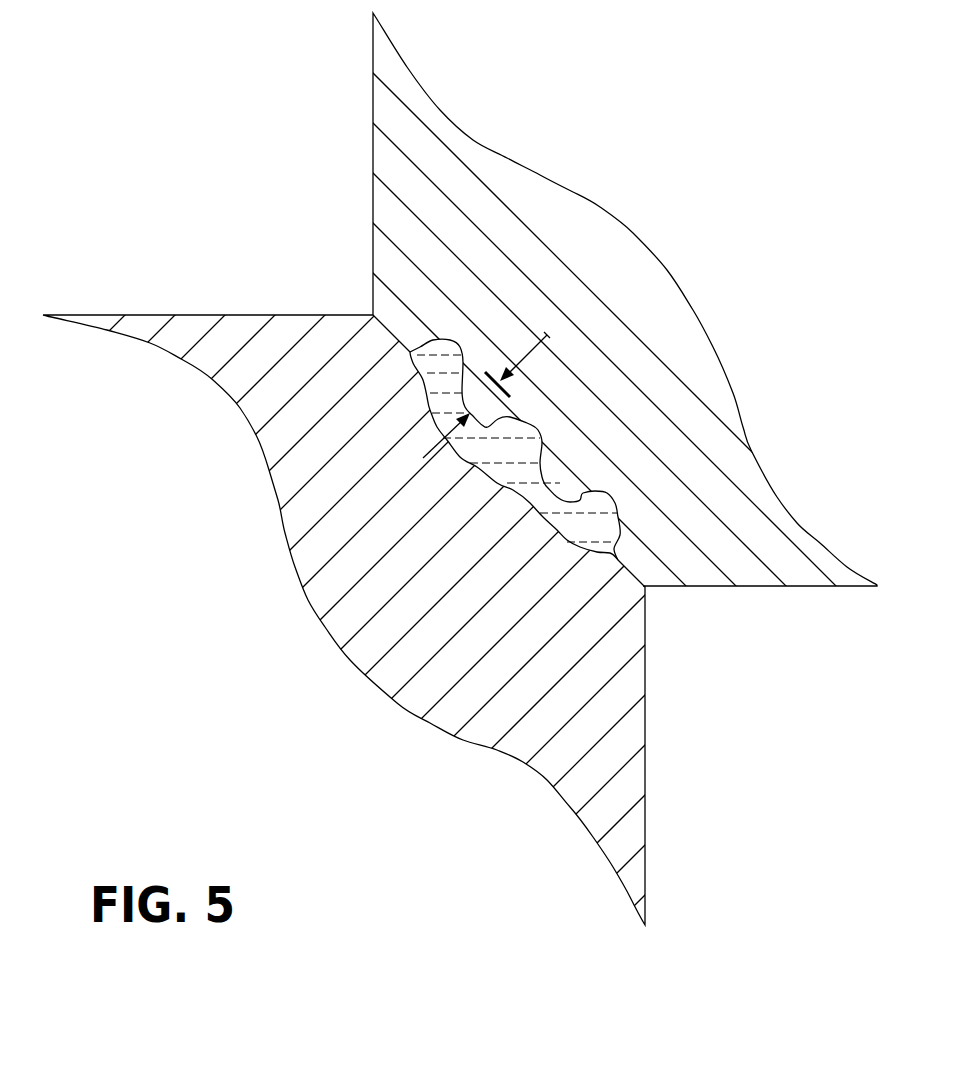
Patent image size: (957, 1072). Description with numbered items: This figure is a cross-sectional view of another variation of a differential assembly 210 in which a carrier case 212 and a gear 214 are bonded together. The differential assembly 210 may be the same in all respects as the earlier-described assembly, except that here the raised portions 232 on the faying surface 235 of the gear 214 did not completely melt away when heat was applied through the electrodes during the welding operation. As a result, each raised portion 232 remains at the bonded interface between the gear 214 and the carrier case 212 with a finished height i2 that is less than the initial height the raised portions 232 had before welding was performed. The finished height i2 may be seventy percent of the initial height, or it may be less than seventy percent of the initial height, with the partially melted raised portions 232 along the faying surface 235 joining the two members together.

The differential assembly 210 is at (621, 123).
The carrier case 212 is at (581, 719).
The gear 214 is at (467, 192).
The raised portions 232 is at (477, 403).
The faying surface 235 is at (480, 430).
The finished height i2 is at (540, 343).